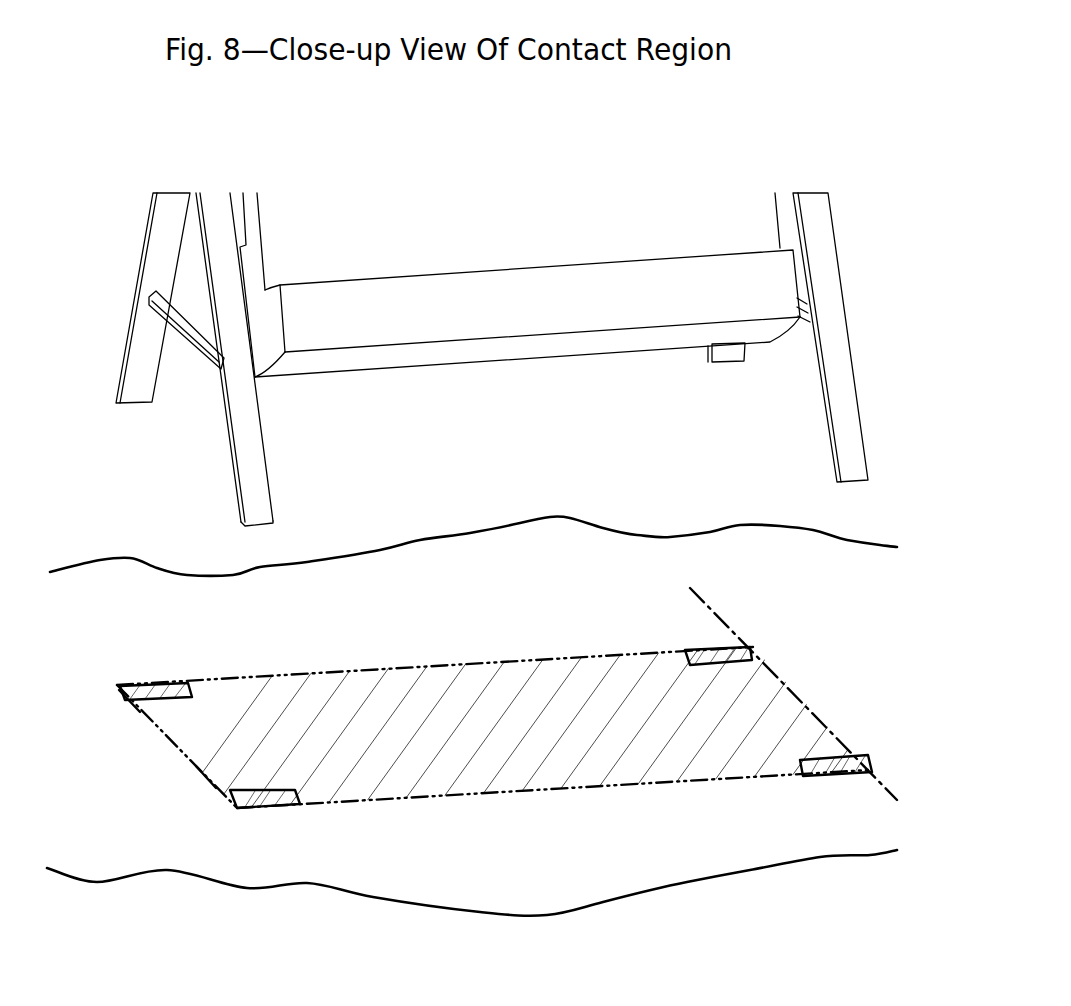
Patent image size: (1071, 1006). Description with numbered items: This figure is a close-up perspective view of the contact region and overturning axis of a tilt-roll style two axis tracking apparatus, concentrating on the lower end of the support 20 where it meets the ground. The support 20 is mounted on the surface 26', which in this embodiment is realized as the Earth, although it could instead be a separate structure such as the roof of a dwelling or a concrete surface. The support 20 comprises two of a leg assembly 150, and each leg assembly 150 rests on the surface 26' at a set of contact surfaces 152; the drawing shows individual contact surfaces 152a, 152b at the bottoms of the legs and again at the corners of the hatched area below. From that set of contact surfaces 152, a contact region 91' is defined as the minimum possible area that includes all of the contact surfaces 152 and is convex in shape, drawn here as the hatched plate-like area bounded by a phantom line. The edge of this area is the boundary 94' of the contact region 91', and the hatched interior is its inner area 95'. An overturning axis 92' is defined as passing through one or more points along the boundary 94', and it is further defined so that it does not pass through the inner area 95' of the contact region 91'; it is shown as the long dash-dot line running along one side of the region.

The support 20 is at (133, 238).
The leg assembly 150 is at (133, 298).
The contact surfaces 152 is at (178, 485).
The foot portion 152a is at (713, 362).
The foot contact portion 152b is at (843, 485).
The surface 26' is at (472, 726).
The contact region 91' is at (577, 709).
The overturning axis 92' is at (753, 687).
The boundary 94' is at (402, 635).
The inner area 95' is at (280, 657).